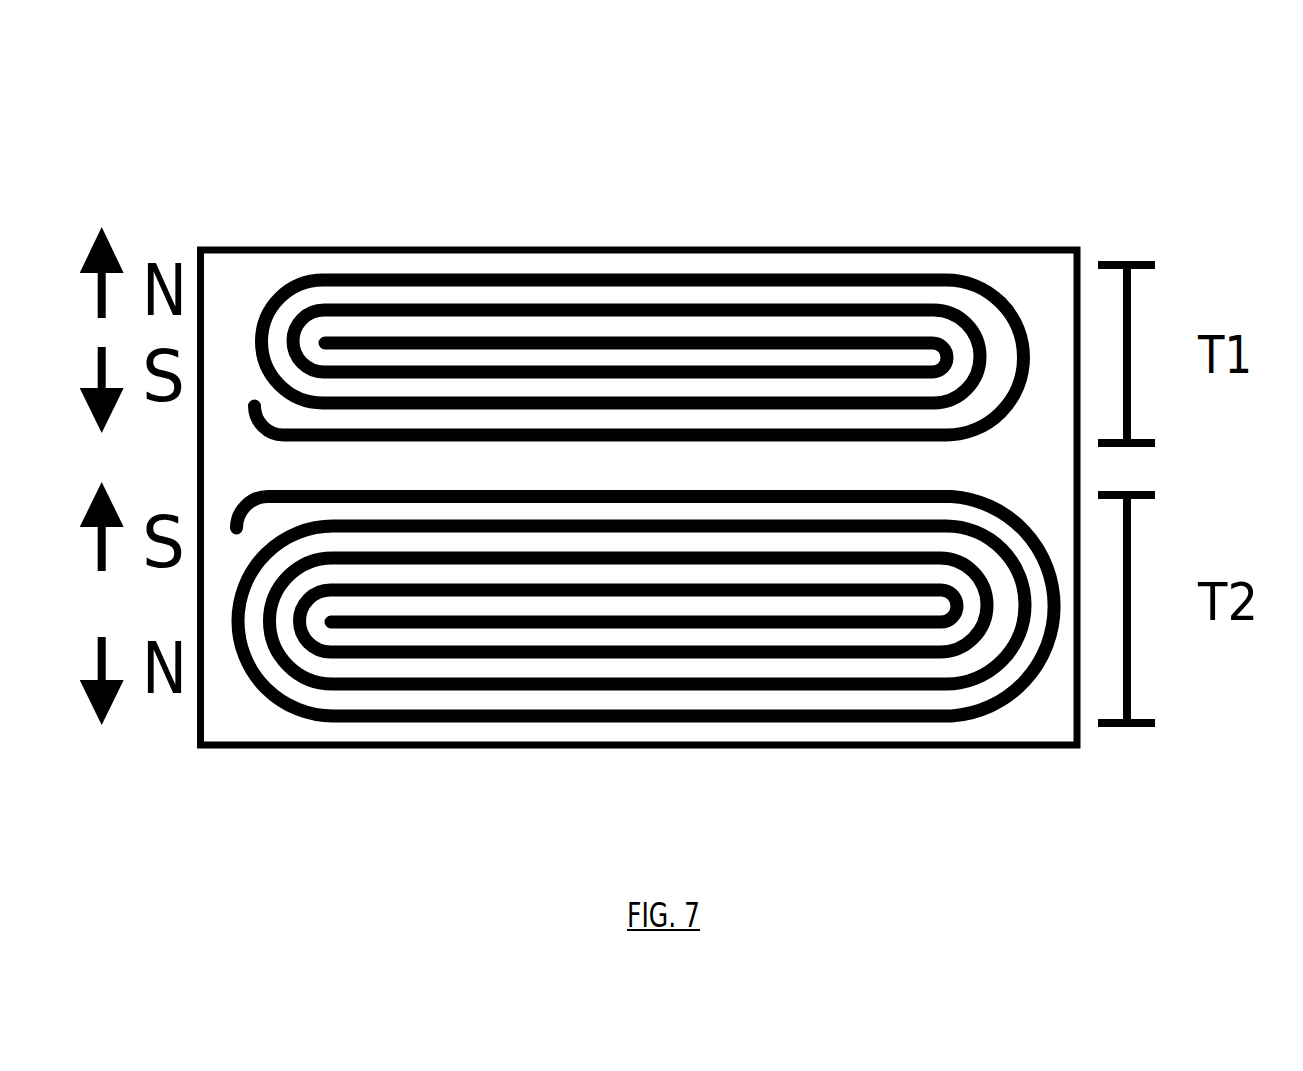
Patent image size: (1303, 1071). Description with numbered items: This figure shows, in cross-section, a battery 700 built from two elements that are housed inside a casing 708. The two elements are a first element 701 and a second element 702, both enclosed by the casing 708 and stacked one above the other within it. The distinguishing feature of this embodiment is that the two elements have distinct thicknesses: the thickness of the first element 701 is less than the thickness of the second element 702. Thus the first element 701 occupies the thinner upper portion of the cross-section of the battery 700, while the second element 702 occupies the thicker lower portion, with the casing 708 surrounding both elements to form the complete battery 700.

The battery 700 is at (1096, 122).
The casing 708 is at (979, 248).
The first element 701 is at (250, 408).
The second element 702 is at (234, 531).